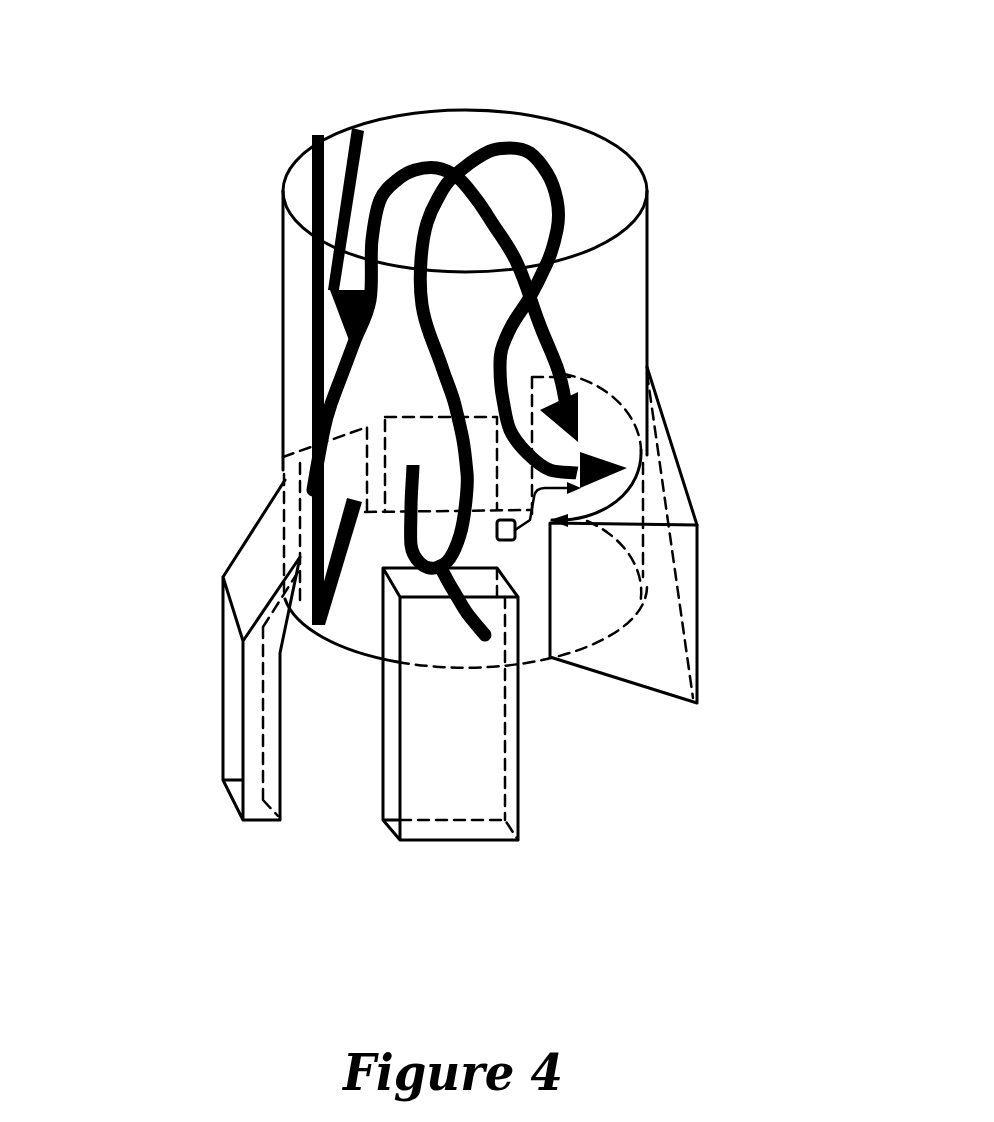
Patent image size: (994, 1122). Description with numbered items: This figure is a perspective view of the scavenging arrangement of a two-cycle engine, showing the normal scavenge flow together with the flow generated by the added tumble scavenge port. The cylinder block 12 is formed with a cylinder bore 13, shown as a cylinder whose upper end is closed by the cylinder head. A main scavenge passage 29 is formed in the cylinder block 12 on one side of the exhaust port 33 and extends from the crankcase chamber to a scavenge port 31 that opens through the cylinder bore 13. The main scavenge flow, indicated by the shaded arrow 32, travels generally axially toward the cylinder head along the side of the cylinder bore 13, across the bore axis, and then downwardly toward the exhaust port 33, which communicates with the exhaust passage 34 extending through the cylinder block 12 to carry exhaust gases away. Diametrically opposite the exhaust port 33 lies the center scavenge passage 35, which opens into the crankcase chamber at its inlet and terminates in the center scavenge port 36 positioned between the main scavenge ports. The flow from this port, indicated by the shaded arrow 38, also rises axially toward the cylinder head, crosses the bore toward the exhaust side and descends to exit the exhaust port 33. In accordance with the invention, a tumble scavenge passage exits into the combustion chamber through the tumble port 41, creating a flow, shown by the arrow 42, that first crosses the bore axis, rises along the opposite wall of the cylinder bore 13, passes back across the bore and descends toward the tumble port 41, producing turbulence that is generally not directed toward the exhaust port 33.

The cylinder block 12 is at (650, 227).
The cylinder bore 13 is at (598, 178).
The main scavenge passage 29 is at (450, 805).
The scavenge port 31 is at (418, 630).
The shaded arrow 32 is at (492, 150).
The exhaust port 33 is at (665, 490).
The exhaust passage 34 is at (653, 675).
The center scavenge passage 35 is at (235, 723).
The center scavenge port 36 is at (300, 478).
The shaded arrow 38 is at (428, 166).
The tumble port 41 is at (352, 474).
The arrow 42 is at (330, 184).